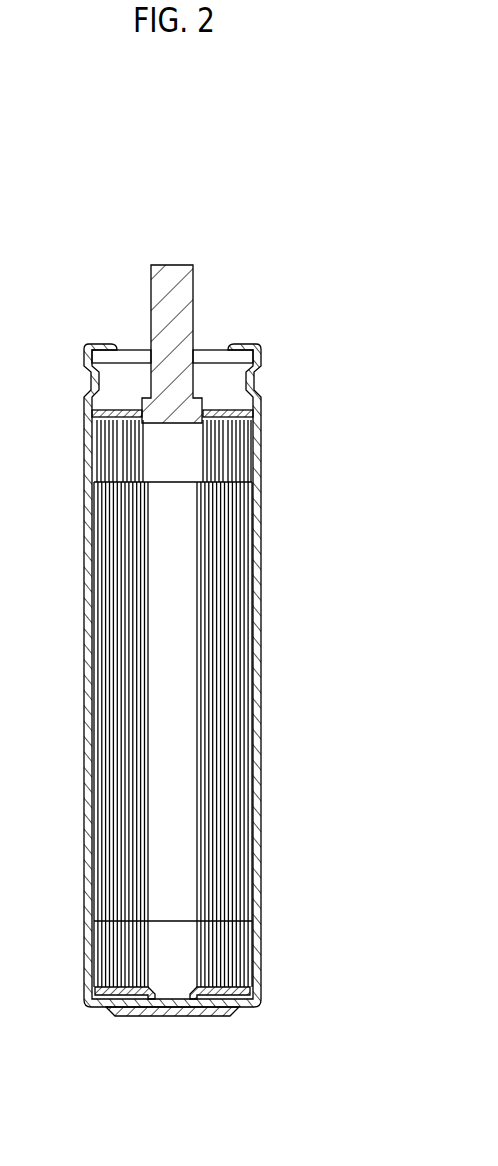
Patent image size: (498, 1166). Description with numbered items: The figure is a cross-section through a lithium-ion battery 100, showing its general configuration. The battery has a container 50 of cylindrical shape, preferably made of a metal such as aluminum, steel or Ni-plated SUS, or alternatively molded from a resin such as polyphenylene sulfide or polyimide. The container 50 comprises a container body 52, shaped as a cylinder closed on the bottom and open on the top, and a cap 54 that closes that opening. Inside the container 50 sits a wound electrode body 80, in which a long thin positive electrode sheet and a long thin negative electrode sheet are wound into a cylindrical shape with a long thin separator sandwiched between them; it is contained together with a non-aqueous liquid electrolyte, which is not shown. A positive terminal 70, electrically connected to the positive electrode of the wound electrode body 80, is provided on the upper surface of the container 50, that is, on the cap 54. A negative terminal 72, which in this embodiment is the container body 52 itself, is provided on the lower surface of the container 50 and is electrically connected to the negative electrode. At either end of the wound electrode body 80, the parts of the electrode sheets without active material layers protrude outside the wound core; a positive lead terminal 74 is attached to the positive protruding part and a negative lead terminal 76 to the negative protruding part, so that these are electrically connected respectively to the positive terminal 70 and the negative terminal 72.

The lithium-ion battery 100 is at (296, 320).
The container 50 is at (82, 811).
The container body 52 is at (263, 790).
The cap 54 is at (138, 357).
The positive terminal 70 is at (186, 264).
The negative terminal 72 is at (217, 1016).
The positive lead terminal 74 is at (221, 410).
The negative lead terminal 76 is at (110, 1006).
The wound electrode body 80 is at (97, 927).